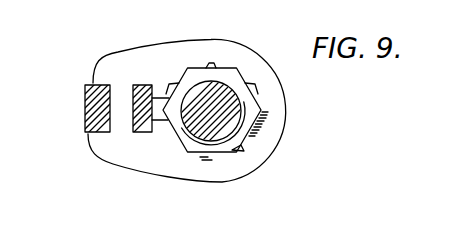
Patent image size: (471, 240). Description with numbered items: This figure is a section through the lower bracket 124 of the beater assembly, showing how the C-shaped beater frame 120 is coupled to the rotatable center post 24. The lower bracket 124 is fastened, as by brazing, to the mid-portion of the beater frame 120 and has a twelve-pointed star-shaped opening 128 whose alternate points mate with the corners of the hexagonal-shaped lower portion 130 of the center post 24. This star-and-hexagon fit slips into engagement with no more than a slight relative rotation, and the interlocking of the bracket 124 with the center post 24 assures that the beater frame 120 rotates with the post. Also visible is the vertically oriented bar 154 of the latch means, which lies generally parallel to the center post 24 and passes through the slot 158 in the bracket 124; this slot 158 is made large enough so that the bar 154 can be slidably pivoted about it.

The center post 24 is at (222, 136).
The beater frame 120 is at (85, 102).
The lower bracket 124 is at (284, 112).
The star-shaped opening 128 is at (212, 66).
The hexagonal-shaped lower portion 130 is at (238, 147).
The bar 154 is at (143, 85).
The slot 158 is at (143, 133).